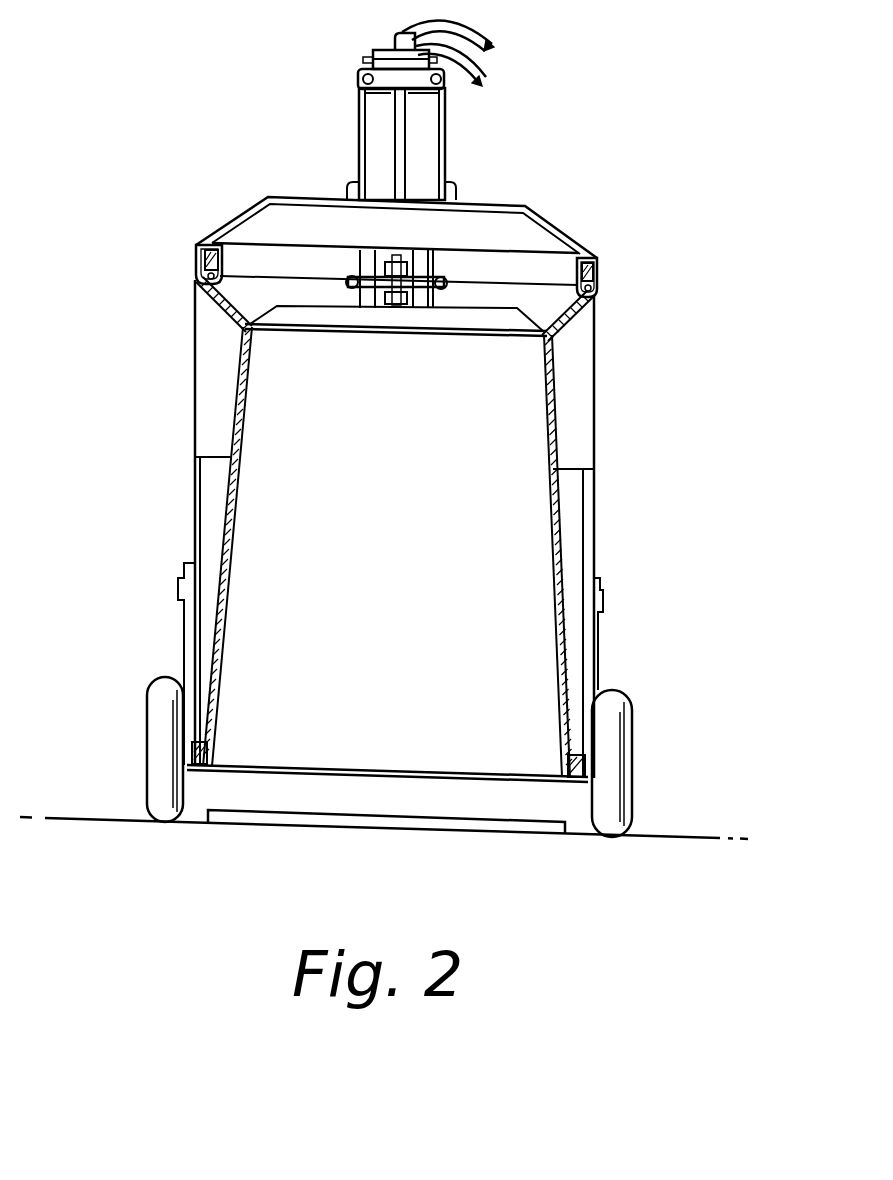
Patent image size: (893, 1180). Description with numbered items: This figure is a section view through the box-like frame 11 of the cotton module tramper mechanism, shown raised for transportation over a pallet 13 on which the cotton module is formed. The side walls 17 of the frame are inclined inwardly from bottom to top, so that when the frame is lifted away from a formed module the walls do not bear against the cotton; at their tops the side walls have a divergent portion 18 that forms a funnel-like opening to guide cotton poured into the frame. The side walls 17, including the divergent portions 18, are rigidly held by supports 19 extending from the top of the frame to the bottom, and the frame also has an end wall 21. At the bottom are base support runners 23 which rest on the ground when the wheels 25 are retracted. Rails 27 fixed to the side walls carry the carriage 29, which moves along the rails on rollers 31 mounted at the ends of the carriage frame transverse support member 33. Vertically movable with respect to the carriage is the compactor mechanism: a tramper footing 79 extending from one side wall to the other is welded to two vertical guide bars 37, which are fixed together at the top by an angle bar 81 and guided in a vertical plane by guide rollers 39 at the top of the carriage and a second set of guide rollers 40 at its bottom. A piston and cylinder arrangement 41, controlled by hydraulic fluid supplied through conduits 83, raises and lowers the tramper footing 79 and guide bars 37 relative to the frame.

The frame 11 is at (612, 386).
The pallet 13 is at (458, 817).
The side walls 17 is at (235, 520).
The divergent portion 18 is at (228, 308).
The supports 19 is at (200, 413).
The end wall 21 is at (420, 622).
The base support runners 23 is at (214, 757).
The wheels 25 is at (145, 707).
The rails 27 is at (194, 268).
The carriage 29 is at (449, 151).
The rollers 31 is at (210, 250).
The carriage frame transverse support member 33 is at (288, 214).
The vertical guide bars 37 is at (358, 266).
The guide rollers 39 is at (358, 68).
The second set of guide rollers 40 is at (460, 258).
The piston and cylinder arrangement 41 is at (405, 170).
The tramper footing 79 is at (325, 334).
The angle bar 81 is at (372, 53).
The conduits 83 is at (498, 38).